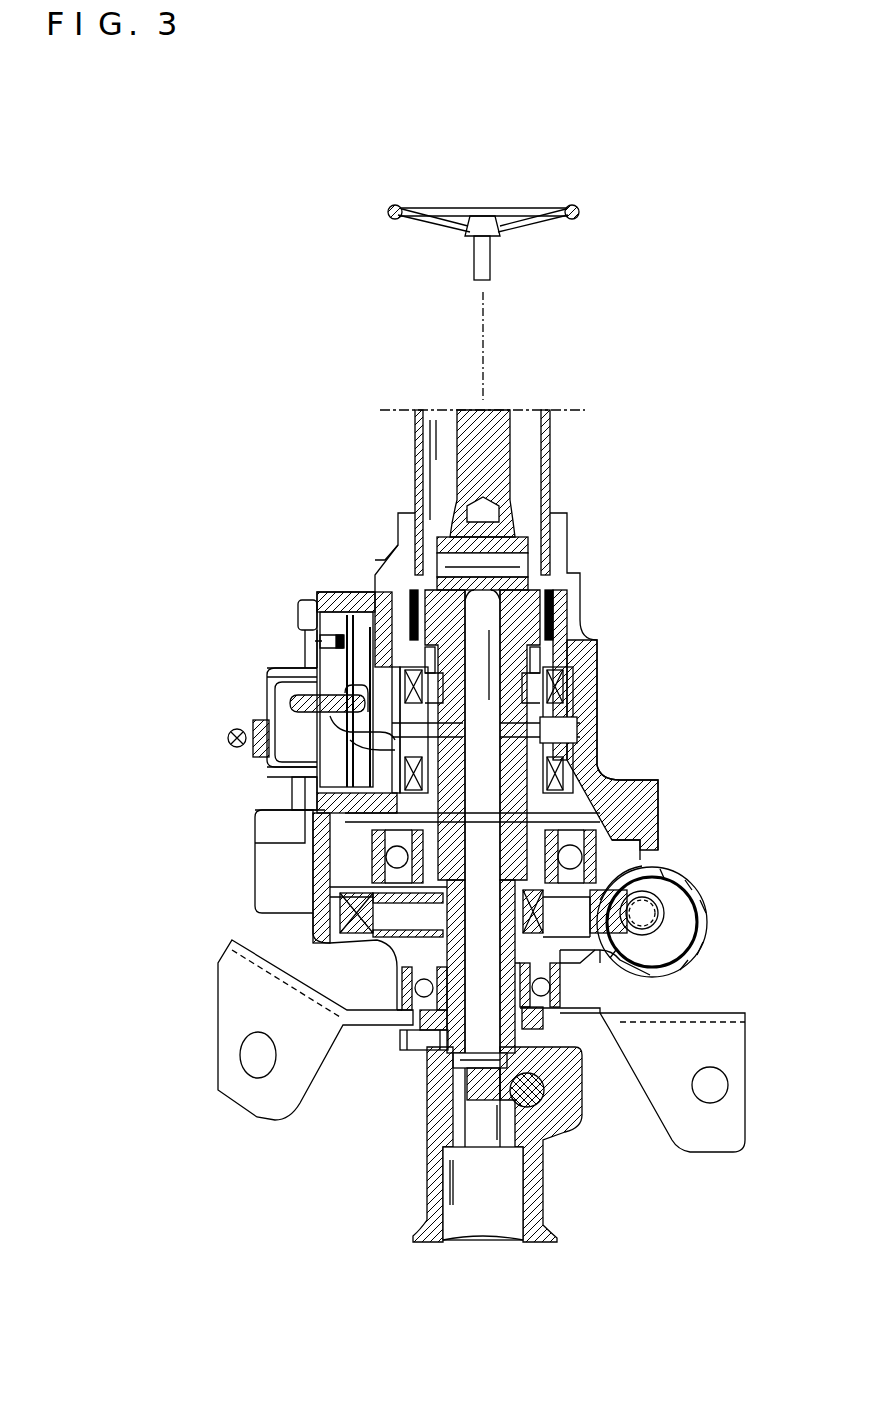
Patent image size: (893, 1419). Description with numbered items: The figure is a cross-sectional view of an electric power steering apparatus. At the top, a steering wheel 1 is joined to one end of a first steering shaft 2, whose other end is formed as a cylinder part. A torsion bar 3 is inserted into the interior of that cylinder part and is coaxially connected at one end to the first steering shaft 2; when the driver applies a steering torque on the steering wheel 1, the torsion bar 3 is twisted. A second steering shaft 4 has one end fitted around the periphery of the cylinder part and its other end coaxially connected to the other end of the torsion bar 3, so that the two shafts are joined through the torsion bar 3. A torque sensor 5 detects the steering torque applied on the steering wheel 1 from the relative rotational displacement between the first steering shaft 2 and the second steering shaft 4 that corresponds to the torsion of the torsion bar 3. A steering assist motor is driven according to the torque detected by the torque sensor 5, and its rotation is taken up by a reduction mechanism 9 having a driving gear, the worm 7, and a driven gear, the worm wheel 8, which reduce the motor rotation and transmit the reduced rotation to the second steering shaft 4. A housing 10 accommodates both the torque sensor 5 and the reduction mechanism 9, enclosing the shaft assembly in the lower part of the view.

The steering wheel 1 is at (395, 212).
The first steering shaft 2 is at (457, 466).
The torsion bar 3 is at (400, 590).
The second steering shaft 4 is at (420, 1050).
The torque sensor 5 is at (340, 736).
The worm 7 is at (665, 914).
The worm wheel 8 is at (622, 885).
The reduction mechanism 9 is at (678, 883).
The housing 10 is at (605, 678).